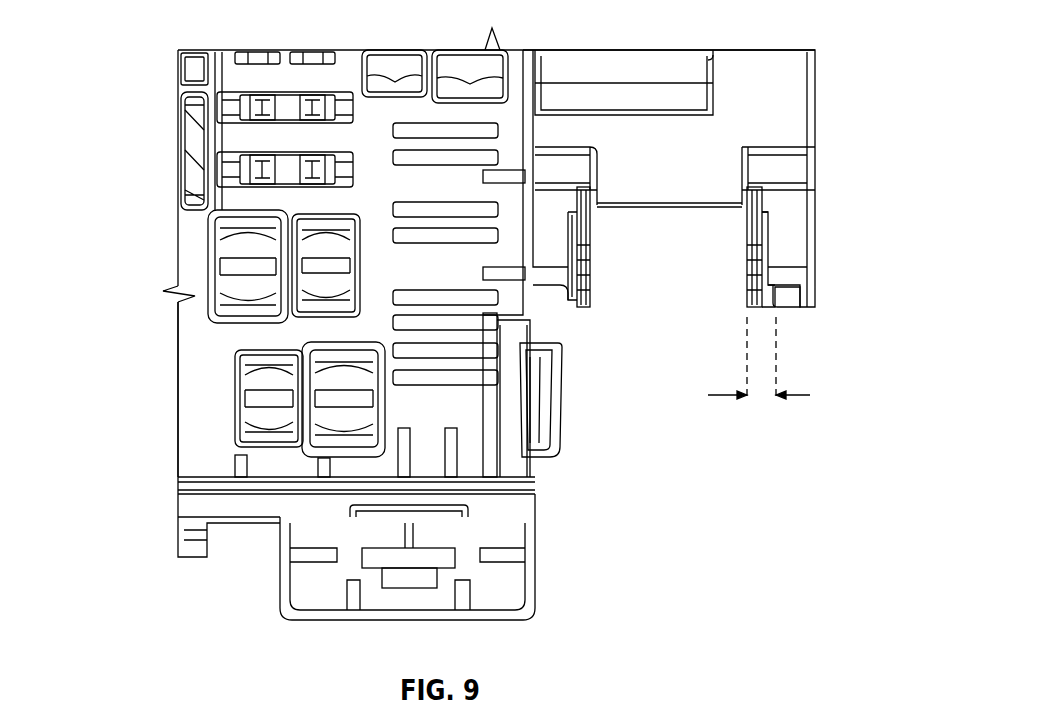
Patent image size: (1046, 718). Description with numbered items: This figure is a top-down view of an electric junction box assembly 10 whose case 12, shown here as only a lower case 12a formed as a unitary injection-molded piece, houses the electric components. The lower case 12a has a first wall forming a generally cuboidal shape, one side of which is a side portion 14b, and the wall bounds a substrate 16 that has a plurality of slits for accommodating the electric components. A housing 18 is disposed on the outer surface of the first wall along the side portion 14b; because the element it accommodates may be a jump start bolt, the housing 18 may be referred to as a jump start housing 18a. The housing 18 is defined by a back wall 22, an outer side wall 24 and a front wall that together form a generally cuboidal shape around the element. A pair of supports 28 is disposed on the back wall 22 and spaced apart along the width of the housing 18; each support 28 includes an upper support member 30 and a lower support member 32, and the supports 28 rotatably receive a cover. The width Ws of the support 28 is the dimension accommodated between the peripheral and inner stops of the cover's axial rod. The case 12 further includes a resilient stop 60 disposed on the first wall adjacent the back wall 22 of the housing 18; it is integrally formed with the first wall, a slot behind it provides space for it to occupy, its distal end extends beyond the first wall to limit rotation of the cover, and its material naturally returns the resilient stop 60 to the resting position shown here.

The electric junction box assembly 10 is at (676, 28).
The case 12 is at (305, 279).
The lower case 12a is at (176, 478).
The side portion 14b is at (540, 498).
The substrate 16 is at (195, 360).
The housing 18 is at (742, 167).
The jump start housing 18a is at (827, 100).
The back wall 22 is at (660, 208).
The outer side wall 24 is at (814, 58).
The support 28 is at (590, 318).
The upper support member 30 is at (562, 300).
The lower support member 32 is at (592, 286).
The resilient stop 60 is at (552, 433).
The width of the support Ws is at (795, 398).